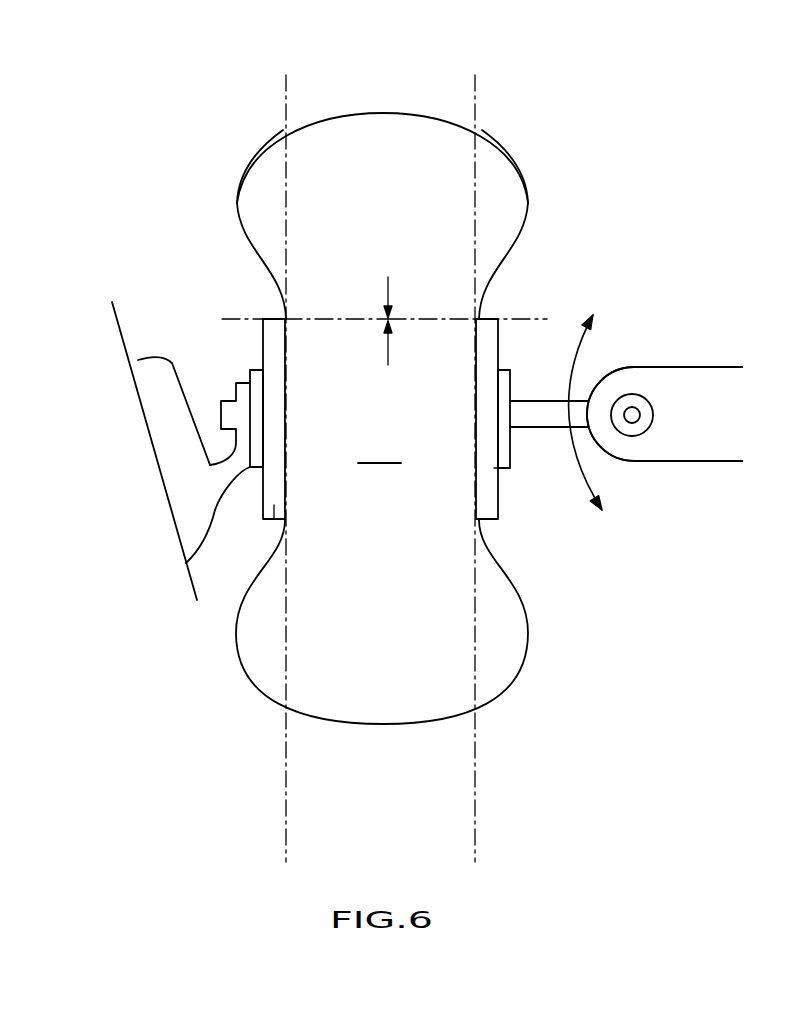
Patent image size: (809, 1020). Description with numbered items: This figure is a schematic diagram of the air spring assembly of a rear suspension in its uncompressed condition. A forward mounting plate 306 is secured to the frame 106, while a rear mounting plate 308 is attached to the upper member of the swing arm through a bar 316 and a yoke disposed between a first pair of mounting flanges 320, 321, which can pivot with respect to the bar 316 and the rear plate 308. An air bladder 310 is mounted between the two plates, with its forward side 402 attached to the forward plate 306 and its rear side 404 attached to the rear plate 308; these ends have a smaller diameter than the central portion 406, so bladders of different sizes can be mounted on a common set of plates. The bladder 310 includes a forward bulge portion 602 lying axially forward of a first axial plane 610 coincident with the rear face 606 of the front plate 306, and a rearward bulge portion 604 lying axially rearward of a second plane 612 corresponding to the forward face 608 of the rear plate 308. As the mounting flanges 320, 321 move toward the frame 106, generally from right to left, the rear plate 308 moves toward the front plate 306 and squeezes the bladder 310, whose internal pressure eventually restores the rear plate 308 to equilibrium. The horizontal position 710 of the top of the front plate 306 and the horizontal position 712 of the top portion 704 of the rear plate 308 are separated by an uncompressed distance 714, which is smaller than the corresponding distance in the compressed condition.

The frame 106 is at (126, 352).
The forward mounting plate 306 is at (285, 520).
The rear mounting plate 308 is at (492, 506).
The bladder 310 is at (380, 449).
The bar 316 is at (543, 418).
The mounting flange 320 is at (672, 387).
The mounting flange 321 is at (664, 414).
The forward side 402 is at (293, 290).
The rear side 404 is at (472, 290).
The central portion 406 is at (383, 137).
The forward bulge portion 602 is at (263, 177).
The rearward bulge portion 604 is at (502, 177).
The rear face 606 is at (287, 493).
The forward face 608 is at (473, 487).
The first axial plane 610 is at (283, 763).
The second plane 612 is at (475, 775).
The top portion 704 is at (275, 322).
The horizontal position 710 is at (237, 318).
The horizontal position 712 is at (527, 317).
The uncompressed distance 714 is at (388, 277).